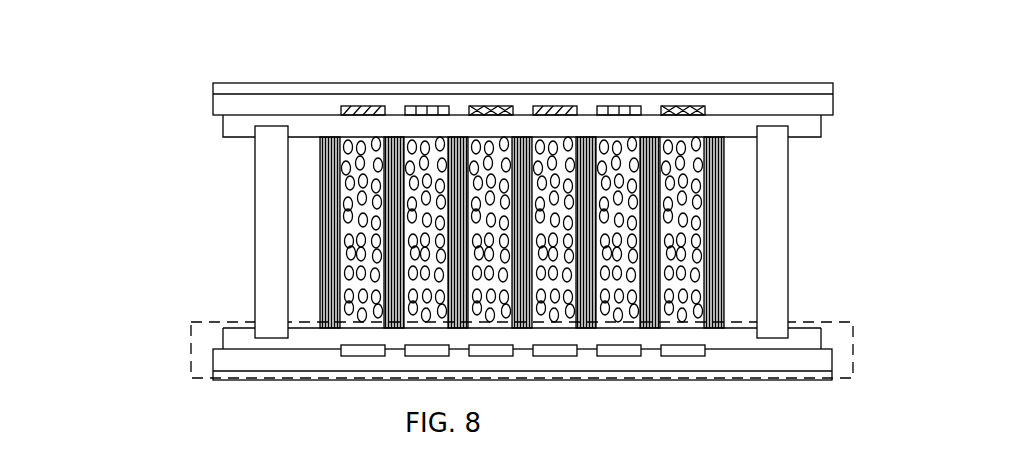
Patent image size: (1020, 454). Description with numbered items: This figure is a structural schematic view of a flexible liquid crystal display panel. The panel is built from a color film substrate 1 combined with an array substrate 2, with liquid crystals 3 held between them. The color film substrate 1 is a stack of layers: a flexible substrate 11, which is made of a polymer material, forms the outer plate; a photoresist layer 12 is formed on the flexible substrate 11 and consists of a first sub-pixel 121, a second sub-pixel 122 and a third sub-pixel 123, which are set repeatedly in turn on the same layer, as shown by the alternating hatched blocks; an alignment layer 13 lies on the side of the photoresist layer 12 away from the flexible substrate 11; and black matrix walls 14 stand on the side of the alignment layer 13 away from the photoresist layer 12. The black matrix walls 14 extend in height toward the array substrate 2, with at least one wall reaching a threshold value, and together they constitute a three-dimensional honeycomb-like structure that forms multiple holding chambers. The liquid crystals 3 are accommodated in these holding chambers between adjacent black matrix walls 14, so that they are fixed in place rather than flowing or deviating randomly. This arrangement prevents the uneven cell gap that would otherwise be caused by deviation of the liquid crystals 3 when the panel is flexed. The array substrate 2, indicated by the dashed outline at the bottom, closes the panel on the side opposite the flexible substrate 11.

The color film substrate 1 is at (460, 175).
The flexible substrate 11 is at (233, 105).
The photoresist layer 12 is at (523, 64).
The first sub-pixel 121 is at (362, 110).
The second sub-pixel 122 is at (427, 110).
The third sub-pixel 123 is at (490, 110).
The alignment layer 13 is at (729, 127).
The black matrix walls 14 is at (719, 188).
The liquid crystals 3 is at (673, 272).
The array substrate 2 is at (810, 317).